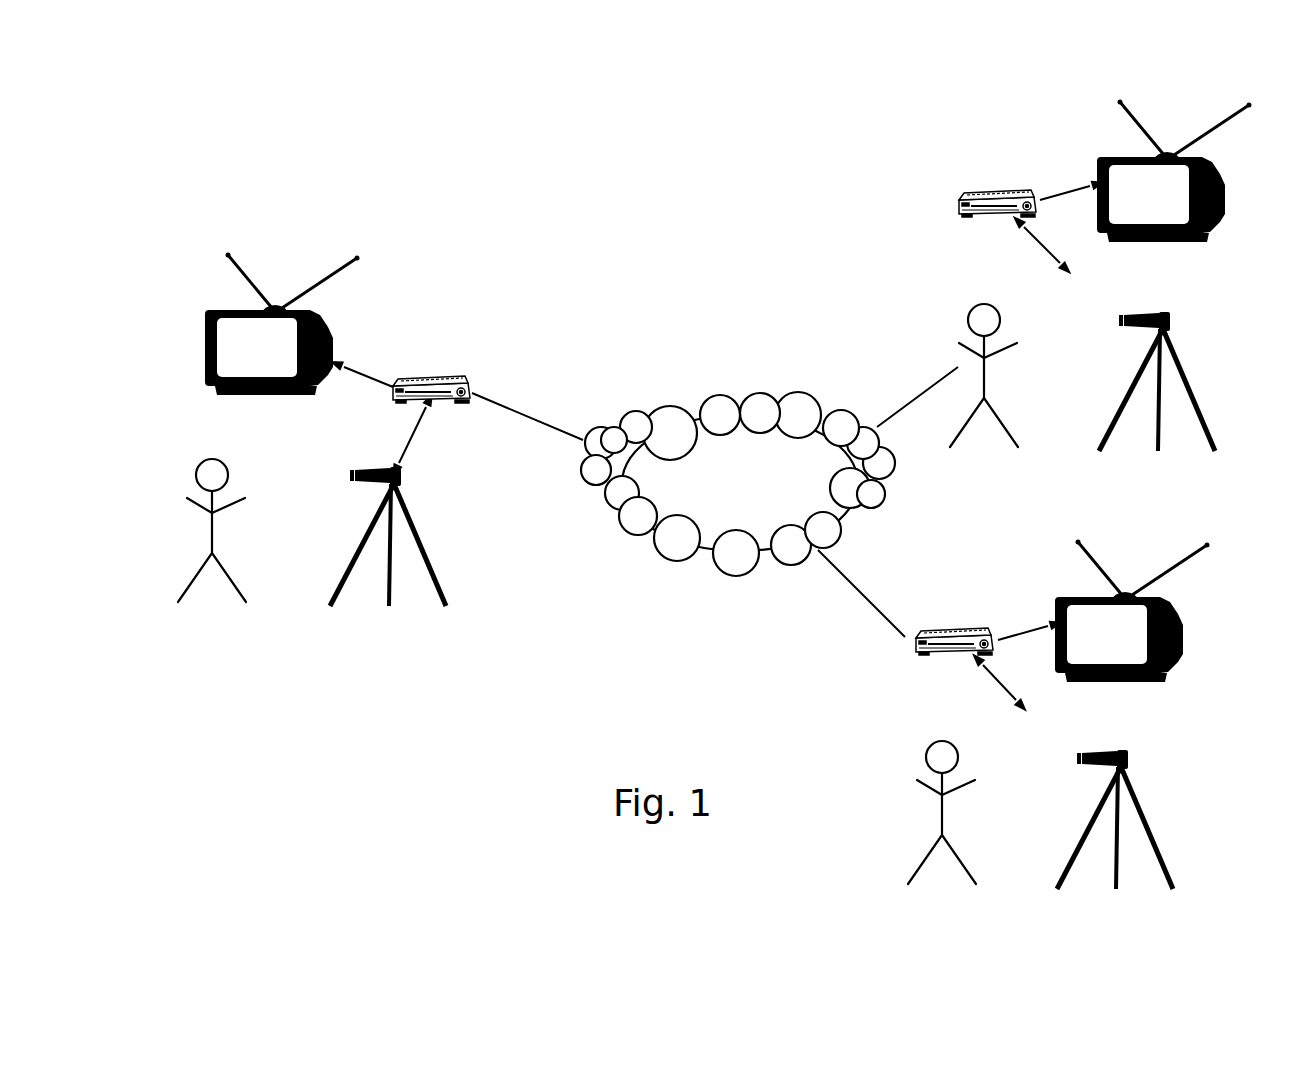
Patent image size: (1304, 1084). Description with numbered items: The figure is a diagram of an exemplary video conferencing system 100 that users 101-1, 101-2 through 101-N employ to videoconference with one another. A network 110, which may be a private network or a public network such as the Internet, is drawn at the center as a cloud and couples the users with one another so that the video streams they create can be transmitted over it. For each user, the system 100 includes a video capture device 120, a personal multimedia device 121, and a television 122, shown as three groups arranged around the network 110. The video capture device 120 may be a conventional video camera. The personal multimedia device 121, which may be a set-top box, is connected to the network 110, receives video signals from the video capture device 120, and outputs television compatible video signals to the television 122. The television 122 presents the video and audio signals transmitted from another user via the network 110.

The video conferencing system 100 is at (403, 718).
The network 110 is at (812, 393).
The video capture device 120 is at (343, 464).
The personal multimedia device 121 is at (466, 375).
The television 122 is at (333, 314).
The user 101-1 is at (248, 448).
The user 101-2 is at (970, 306).
The user 101-N is at (932, 745).